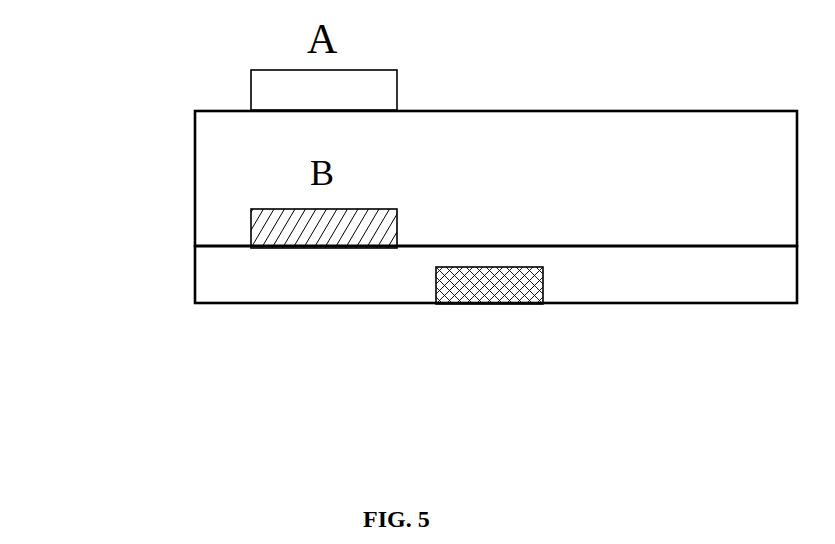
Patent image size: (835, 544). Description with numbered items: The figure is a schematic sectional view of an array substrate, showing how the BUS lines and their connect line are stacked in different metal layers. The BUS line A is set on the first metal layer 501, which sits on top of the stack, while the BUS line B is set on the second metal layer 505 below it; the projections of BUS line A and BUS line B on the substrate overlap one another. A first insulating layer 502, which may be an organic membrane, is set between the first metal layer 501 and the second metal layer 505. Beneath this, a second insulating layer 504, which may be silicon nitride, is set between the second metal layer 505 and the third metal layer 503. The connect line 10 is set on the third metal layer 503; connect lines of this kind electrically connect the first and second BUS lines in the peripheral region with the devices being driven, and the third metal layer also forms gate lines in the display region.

The first metal layer 501 is at (242, 90).
The first insulating layer 502 is at (225, 167).
The third metal layer 503 is at (476, 334).
The second insulating layer 504 is at (217, 278).
The second metal layer 505 is at (275, 209).
The connect line 10 is at (491, 285).